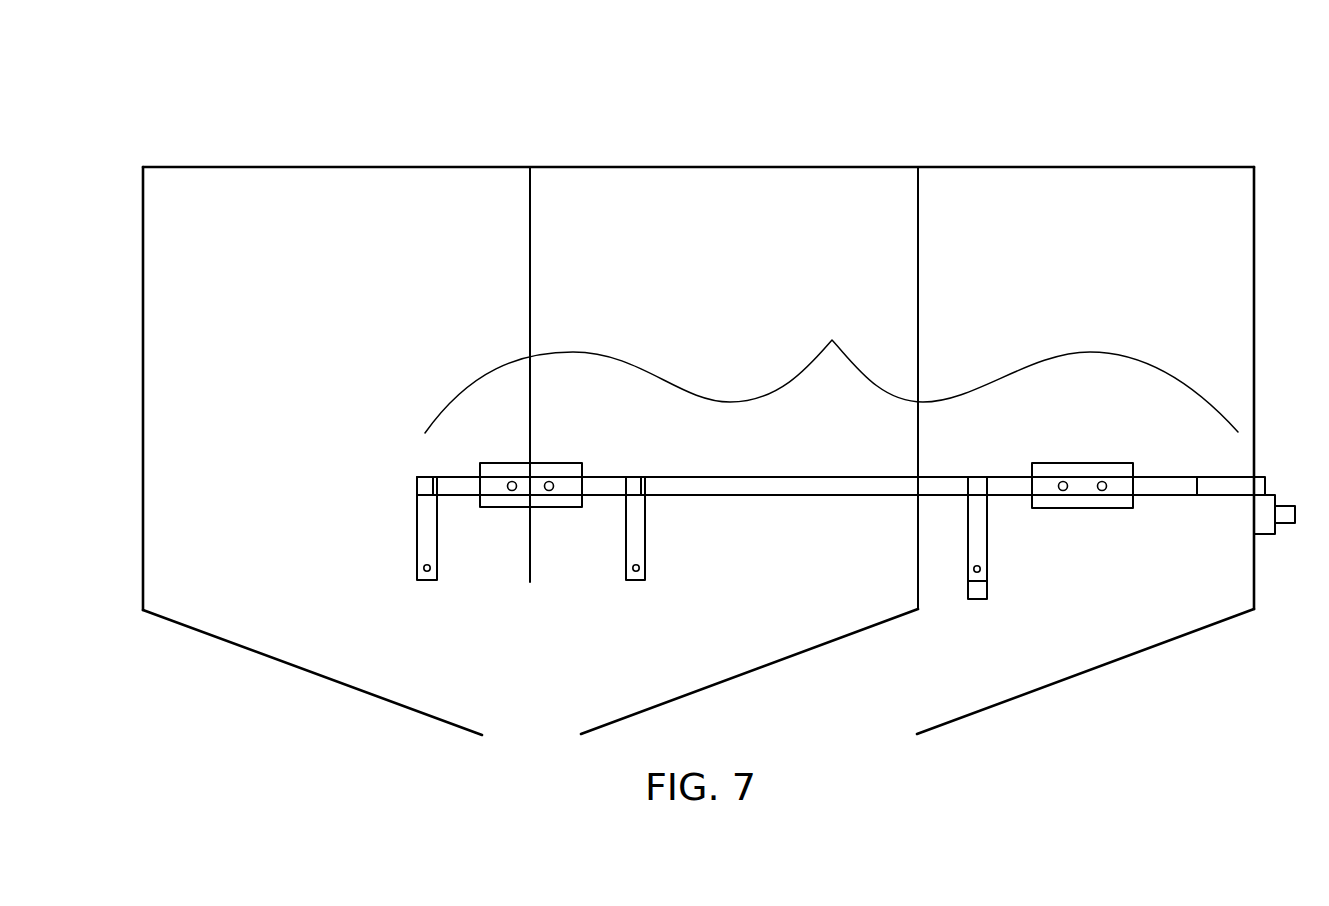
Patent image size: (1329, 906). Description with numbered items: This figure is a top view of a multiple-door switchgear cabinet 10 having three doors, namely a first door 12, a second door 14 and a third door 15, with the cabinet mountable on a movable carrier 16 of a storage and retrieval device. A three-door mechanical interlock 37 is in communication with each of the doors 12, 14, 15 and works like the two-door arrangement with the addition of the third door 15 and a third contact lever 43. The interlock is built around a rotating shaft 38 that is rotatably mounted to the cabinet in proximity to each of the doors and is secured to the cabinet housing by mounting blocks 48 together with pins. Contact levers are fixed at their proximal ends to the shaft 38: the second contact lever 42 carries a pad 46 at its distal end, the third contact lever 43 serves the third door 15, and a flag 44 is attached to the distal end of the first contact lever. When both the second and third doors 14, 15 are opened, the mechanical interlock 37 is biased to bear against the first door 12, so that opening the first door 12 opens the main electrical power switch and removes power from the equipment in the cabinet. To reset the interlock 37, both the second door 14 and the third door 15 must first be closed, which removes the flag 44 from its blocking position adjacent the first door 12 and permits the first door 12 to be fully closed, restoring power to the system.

The multiple-door switchgear cabinet 10 is at (698, 394).
The first door 12 is at (1097, 670).
The second door 14 is at (777, 663).
The third door 15 is at (290, 667).
The movable carrier 16 is at (1086, 167).
The three-door mechanical interlock 37 is at (831, 371).
The rotating shaft 38 is at (947, 475).
The second contact lever 42 is at (645, 528).
The third contact lever 43 is at (417, 528).
The flag 44 is at (977, 599).
The pad 46 is at (427, 571).
The mounting blocks 48 is at (572, 469).